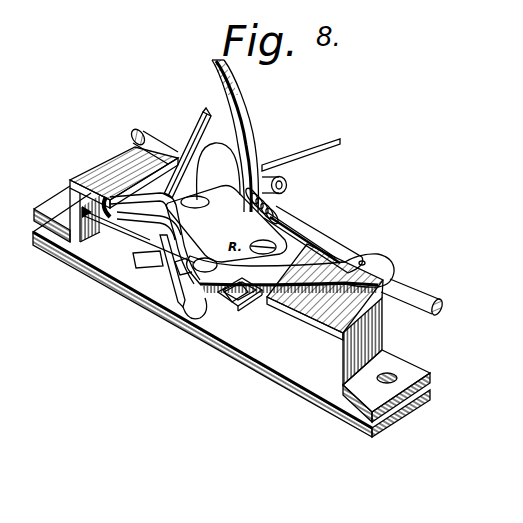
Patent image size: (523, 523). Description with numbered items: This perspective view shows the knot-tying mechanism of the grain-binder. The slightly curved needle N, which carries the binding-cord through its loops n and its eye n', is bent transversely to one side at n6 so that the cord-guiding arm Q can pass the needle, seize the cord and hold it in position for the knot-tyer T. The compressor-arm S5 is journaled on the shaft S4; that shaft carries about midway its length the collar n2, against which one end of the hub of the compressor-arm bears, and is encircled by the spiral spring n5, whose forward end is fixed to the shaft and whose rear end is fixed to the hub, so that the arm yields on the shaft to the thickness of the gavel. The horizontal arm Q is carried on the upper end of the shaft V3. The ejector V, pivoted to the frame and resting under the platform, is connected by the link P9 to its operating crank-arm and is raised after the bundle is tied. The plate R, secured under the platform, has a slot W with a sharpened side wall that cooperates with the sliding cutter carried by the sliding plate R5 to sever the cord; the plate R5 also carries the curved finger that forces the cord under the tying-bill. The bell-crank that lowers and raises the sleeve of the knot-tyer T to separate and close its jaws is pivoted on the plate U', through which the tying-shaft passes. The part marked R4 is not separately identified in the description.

The plate U' is at (231, 315).
The upper plate R is at (127, 229).
The bracket block R4 is at (229, 303).
The sliding plate R5 is at (324, 333).
The ejector V is at (138, 200).
The cord-guiding-arm shaft V3 is at (396, 279).
The loops n is at (167, 237).
The eye n' is at (186, 277).
The collar n2 is at (218, 171).
The spiral spring n5 is at (280, 205).
The transverse bend of needle n6 is at (133, 198).
The needle N is at (202, 134).
The knot-tyer T is at (226, 224).
The slot W is at (194, 236).
The cord-guiding arm Q is at (291, 273).
The shaft S4 is at (348, 224).
The compressor-arm S5 is at (284, 128).
The link P9 is at (290, 157).